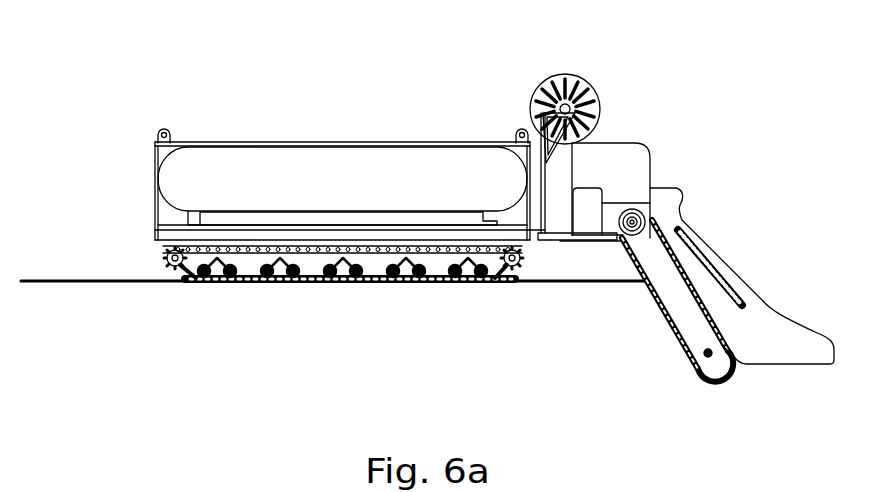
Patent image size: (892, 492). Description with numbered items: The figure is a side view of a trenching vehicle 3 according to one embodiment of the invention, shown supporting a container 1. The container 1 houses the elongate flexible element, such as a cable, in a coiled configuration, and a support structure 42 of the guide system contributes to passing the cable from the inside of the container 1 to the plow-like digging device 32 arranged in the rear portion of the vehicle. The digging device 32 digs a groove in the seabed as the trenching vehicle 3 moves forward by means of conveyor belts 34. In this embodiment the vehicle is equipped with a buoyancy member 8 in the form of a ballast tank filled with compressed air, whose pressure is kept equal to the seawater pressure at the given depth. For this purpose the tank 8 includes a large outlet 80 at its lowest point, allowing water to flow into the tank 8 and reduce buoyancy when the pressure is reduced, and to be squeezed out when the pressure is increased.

The container 1 is at (155, 148).
The buoyancy member 8 is at (335, 166).
The outlet 80 is at (188, 214).
The conveyor belt 34 is at (357, 284).
The support structure 42 is at (580, 77).
The trenching vehicle 3 is at (627, 121).
The plow-like digging device 32 is at (776, 313).